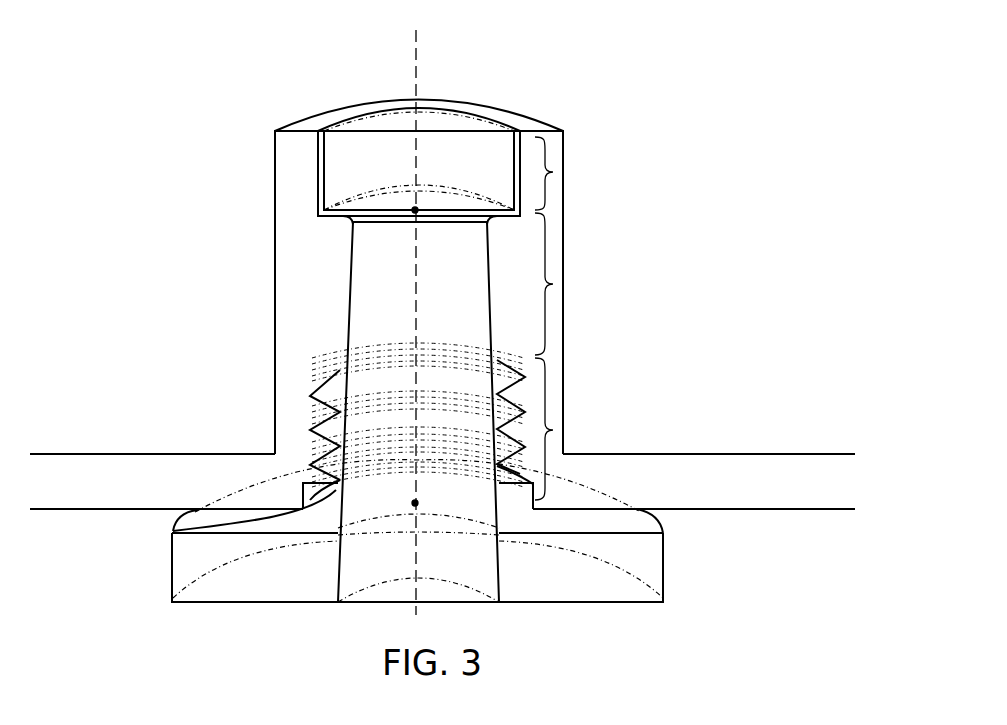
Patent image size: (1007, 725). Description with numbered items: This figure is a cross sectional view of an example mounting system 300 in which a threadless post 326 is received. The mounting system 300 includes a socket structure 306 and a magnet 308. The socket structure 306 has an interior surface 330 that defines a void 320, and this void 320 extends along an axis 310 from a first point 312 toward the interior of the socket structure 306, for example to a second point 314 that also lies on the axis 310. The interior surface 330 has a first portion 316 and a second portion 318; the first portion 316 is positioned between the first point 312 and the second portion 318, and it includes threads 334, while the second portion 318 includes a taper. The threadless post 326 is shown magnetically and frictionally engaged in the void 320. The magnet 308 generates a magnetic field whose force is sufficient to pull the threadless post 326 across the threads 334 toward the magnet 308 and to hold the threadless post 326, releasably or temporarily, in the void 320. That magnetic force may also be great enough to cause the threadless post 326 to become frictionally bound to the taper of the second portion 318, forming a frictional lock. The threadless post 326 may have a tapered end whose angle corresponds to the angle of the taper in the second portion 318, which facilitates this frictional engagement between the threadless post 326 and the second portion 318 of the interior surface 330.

The mounting system 300 is at (720, 84).
The socket structure 306 is at (275, 385).
The magnet 308 is at (553, 172).
The axis 310 is at (417, 58).
The first point 312 is at (415, 503).
The second point 314 is at (415, 210).
The first portion 316 is at (553, 430).
The second portion 318 is at (553, 284).
The void 320 is at (173, 531).
The threadless post 326 is at (372, 209).
The interior surface 330 is at (484, 291).
The threads 334 is at (342, 368).